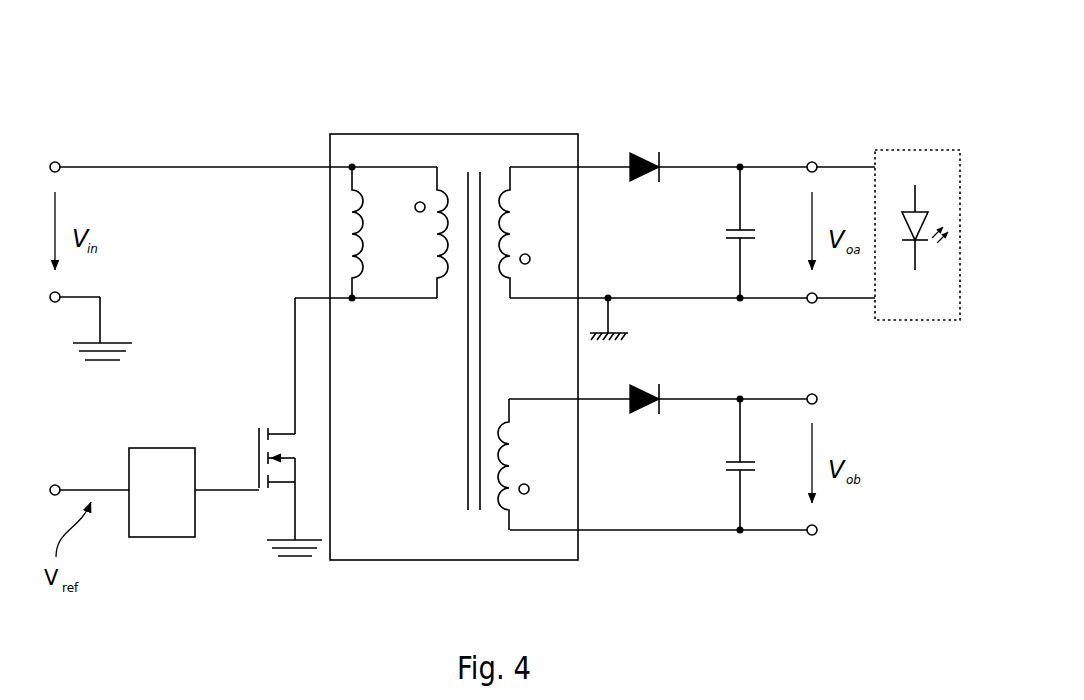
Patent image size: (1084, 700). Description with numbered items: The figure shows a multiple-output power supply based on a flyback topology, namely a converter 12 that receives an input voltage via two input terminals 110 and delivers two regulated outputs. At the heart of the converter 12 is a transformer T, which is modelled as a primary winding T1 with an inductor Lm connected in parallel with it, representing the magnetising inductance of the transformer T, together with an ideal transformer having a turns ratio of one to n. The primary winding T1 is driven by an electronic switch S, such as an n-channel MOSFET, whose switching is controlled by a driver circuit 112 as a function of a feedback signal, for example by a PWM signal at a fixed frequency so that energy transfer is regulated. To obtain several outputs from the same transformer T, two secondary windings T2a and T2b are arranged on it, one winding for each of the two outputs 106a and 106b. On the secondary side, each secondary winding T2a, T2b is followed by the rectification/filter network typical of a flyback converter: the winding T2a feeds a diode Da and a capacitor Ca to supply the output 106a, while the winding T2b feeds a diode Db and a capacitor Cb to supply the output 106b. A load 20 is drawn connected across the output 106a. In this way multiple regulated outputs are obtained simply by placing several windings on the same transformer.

The converter 12 is at (297, 72).
The input terminals 110 is at (60, 159).
The driver circuit 112 is at (163, 526).
The first output 106a is at (811, 148).
The second output 106b is at (811, 380).
The LED load 20 is at (917, 141).
The transformer T is at (461, 132).
The primary winding T1 is at (446, 284).
The first secondary winding T2a is at (497, 284).
The second secondary winding T2b is at (497, 515).
The magnetising inductance Lm is at (342, 240).
The electronic switch S is at (251, 413).
The diode Da is at (645, 148).
The diode Db is at (645, 380).
The capacitor Ca is at (732, 222).
The capacitor Cb is at (732, 454).